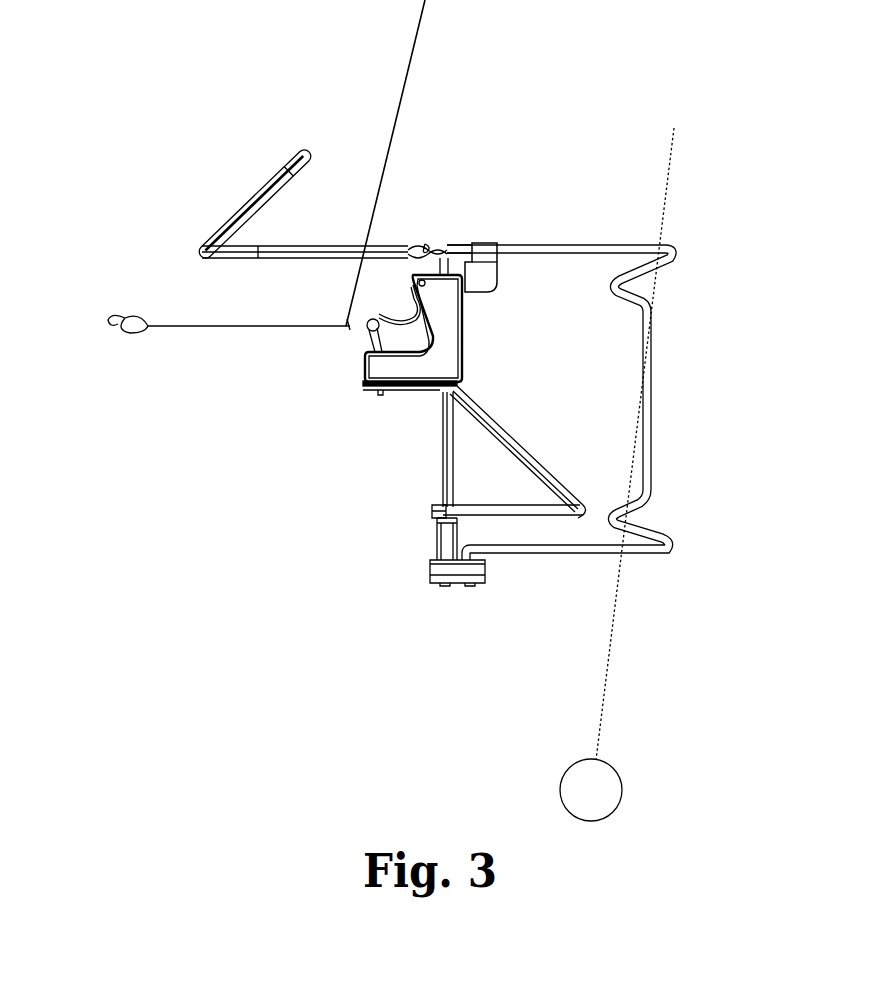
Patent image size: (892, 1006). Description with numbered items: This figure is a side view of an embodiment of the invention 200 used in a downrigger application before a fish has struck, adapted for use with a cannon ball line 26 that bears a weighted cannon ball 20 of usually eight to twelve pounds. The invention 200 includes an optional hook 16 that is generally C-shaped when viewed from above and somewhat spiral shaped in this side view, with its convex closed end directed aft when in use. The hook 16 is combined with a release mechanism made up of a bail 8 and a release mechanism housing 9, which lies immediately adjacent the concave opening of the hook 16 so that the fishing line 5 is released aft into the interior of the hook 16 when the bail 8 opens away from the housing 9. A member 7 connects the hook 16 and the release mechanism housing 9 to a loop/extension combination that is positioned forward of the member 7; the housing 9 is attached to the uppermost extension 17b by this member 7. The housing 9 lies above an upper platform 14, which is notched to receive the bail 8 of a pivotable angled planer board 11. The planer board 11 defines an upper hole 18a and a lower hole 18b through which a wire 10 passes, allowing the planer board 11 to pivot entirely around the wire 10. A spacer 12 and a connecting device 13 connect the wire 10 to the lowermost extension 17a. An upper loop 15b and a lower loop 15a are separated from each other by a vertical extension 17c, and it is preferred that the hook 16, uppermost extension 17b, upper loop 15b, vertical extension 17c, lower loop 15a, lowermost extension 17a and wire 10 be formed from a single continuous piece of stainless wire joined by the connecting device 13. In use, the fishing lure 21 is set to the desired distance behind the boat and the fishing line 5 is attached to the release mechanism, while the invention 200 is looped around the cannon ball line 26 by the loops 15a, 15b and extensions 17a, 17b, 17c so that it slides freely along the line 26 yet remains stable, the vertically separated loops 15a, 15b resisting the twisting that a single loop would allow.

The invention 200 is at (266, 100).
The fishing line 5 is at (402, 95).
The hook 16 is at (238, 213).
The member 7 is at (478, 243).
The uppermost extension 17b is at (553, 247).
The release mechanism bail 8 is at (420, 305).
The release mechanism housing 9 is at (465, 337).
The upper loop 15b is at (673, 263).
The vertical extension 17c is at (652, 415).
The upper platform 14 is at (363, 395).
The upper hole 18a is at (426, 399).
The wire 10 is at (447, 450).
The planer board 11 is at (557, 498).
The lower hole 18b is at (428, 494).
The spacer 12 is at (445, 540).
The connecting device 13 is at (473, 567).
The lowermost extension 17a is at (595, 548).
The lower loop 15a is at (667, 543).
The fishing lure 21 is at (142, 335).
The cannon ball line 26 is at (607, 695).
The cannon ball 20 is at (608, 800).